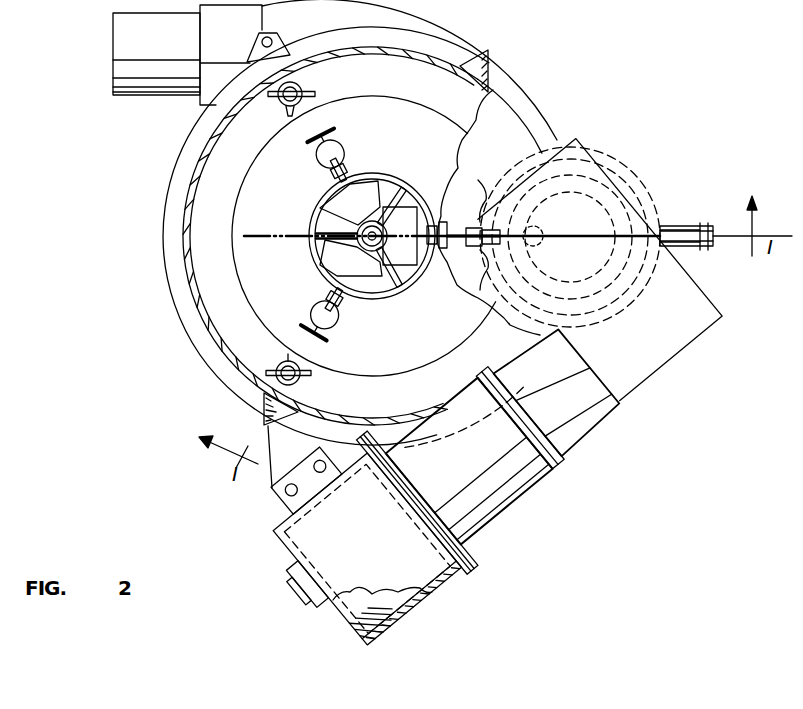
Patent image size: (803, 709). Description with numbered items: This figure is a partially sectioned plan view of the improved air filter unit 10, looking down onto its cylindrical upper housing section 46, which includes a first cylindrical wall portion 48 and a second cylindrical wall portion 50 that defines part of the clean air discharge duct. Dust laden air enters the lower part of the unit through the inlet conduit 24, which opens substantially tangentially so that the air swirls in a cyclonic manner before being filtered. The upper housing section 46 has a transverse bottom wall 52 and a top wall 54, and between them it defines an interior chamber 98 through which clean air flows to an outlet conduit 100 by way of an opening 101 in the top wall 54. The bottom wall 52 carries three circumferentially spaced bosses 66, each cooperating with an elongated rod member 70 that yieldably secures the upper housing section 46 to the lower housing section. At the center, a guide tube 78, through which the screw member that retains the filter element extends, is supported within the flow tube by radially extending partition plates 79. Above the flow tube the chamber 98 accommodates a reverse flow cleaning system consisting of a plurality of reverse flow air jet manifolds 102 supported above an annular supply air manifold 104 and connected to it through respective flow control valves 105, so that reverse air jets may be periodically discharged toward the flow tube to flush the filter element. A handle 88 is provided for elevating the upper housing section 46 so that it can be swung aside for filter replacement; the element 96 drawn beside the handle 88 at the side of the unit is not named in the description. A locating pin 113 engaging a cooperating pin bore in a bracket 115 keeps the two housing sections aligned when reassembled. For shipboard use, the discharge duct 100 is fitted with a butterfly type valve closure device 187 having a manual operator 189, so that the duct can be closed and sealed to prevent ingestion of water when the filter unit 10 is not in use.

The air filter unit 10 is at (504, 46).
The inlet conduit 24 is at (114, 20).
The upper housing section 46 is at (215, 350).
The first cylindrical wall portion 48 is at (190, 312).
The second cylindrical wall portion 50 is at (620, 172).
The bottom wall 52 is at (186, 240).
The top wall 54 is at (531, 118).
The bosses 66 is at (303, 89).
The rod members 70 is at (303, 104).
The guide tube 78 is at (368, 203).
The partition plates 79 is at (410, 195).
The handle 88 is at (697, 223).
The shaft bearing 96 is at (667, 227).
The interior chamber 98 is at (248, 163).
The outlet conduit 100 is at (427, 603).
The opening 101 is at (570, 237).
The reverse flow air jet manifolds 102 is at (330, 212).
The annular supply air manifold 104 is at (426, 356).
The flow control valves 105 is at (350, 150).
The locating pin 113 is at (271, 35).
The bracket 115 is at (258, 38).
The butterfly type valve closure device 187 is at (355, 628).
The manual operator 189 is at (292, 588).